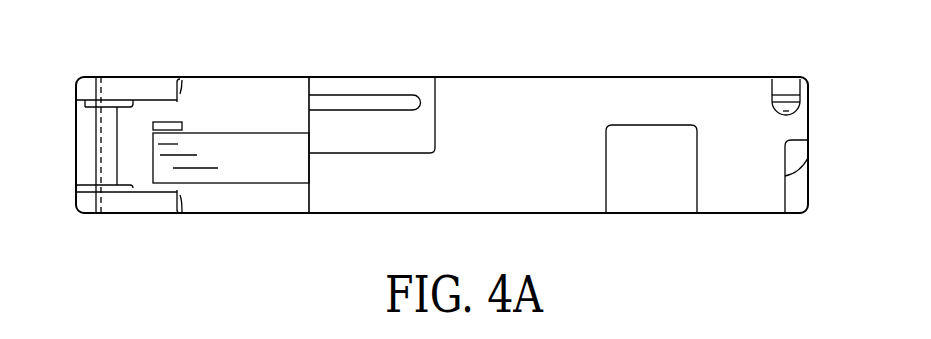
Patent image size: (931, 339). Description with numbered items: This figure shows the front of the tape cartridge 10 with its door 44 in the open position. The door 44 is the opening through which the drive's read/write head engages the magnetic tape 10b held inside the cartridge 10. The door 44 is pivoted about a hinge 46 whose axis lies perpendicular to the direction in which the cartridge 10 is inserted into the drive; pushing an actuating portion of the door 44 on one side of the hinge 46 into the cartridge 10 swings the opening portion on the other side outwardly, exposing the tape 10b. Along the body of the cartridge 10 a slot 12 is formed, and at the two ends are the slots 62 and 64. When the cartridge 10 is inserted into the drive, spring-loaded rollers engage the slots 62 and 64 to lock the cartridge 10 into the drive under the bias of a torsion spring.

The cartridge 10 is at (527, 78).
The tape 10b is at (250, 133).
The slot 12 is at (387, 95).
The door 44 is at (128, 100).
The hinge 46 is at (83, 100).
The slot 62 is at (76, 130).
The slot 64 is at (801, 157).